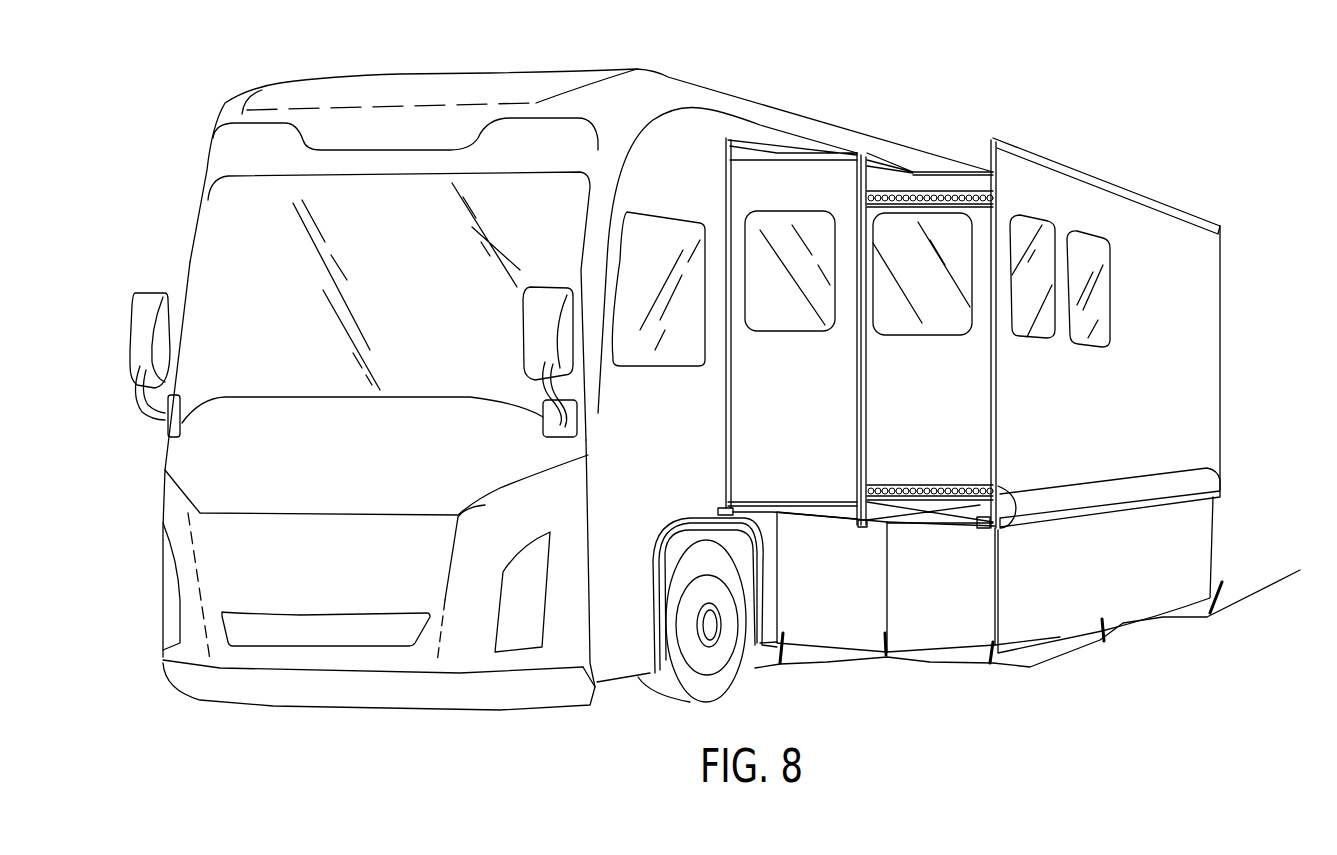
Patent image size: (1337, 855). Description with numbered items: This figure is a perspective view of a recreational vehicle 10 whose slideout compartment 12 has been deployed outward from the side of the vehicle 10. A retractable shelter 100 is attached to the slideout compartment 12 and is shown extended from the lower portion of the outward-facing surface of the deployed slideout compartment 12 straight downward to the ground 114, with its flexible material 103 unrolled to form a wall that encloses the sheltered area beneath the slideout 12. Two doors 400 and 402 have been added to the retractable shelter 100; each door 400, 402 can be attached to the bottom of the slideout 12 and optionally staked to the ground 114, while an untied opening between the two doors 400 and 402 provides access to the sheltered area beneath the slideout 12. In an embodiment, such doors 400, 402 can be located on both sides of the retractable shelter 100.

The recreational vehicle 10 is at (717, 95).
The slideout compartment 12 is at (1122, 389).
The retractable shelter 100 is at (1000, 490).
The door 400 is at (855, 602).
The door 402 is at (962, 605).
The flexible material 103 is at (1137, 572).
The ground 114 is at (832, 667).